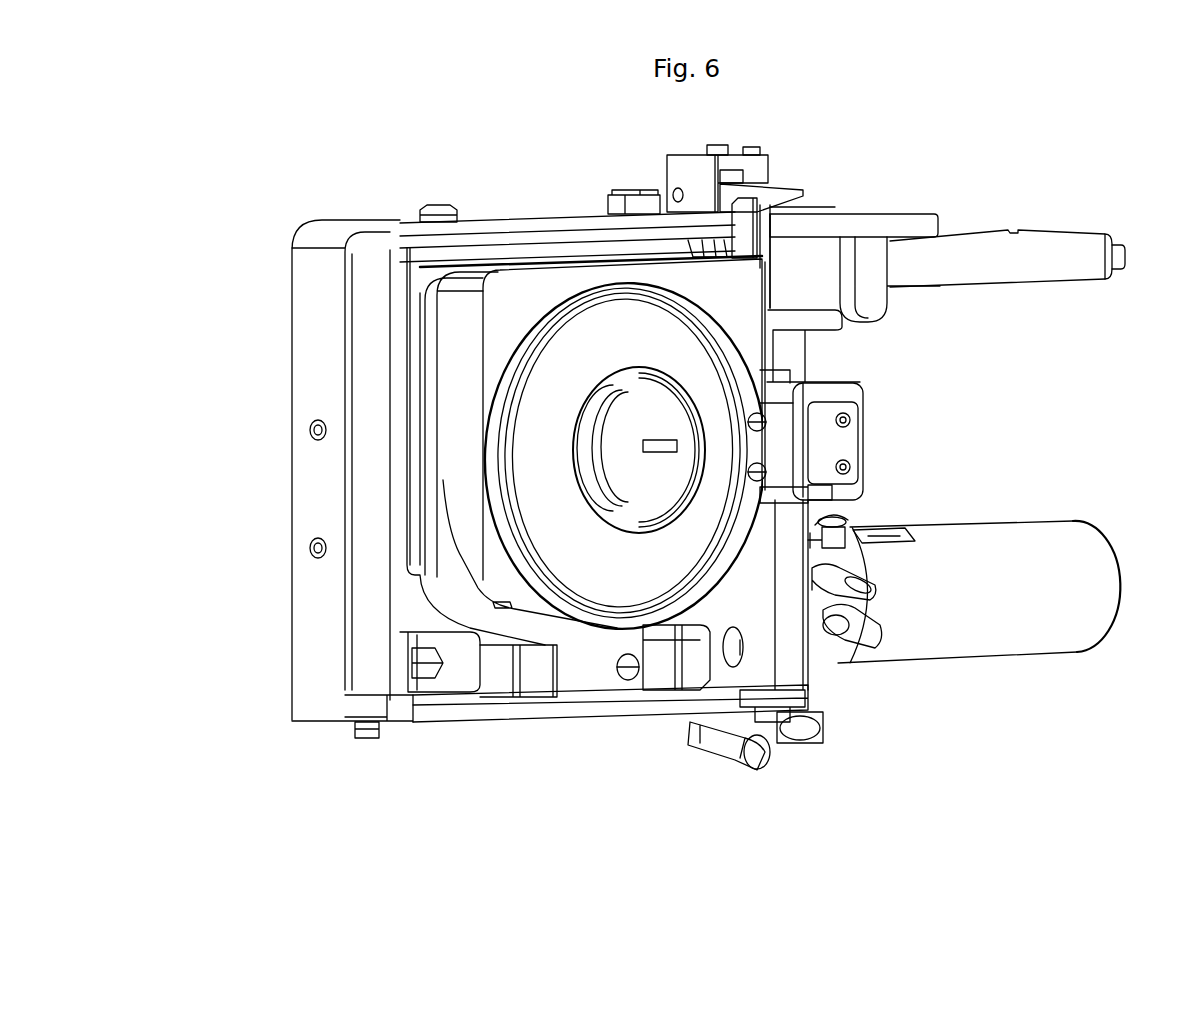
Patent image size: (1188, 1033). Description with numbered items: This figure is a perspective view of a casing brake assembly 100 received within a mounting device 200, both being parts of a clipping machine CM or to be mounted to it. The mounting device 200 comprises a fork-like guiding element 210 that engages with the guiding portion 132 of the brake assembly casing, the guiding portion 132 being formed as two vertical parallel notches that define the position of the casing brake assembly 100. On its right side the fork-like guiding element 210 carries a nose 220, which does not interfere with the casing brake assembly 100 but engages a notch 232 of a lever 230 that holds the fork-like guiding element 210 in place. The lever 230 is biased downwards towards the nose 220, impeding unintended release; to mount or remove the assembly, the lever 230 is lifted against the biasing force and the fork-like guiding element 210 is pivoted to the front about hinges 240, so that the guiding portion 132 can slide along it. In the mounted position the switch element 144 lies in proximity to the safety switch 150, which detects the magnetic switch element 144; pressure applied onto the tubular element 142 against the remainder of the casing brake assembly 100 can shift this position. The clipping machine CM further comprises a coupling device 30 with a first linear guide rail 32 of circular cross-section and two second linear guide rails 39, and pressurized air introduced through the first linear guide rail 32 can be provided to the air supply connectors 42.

The mounting device 200 is at (490, 188).
The fork-like guiding element 210 is at (430, 318).
The guiding portion 132 is at (430, 266).
The tubular element 142 is at (540, 450).
The notch 232 is at (740, 203).
The lever 230 is at (760, 238).
The nose 220 is at (833, 213).
The second linear guide rail 39 is at (947, 258).
The safety switch 150 is at (827, 438).
The switch element 144 is at (768, 448).
The first linear guide rail 32 is at (947, 608).
The air supply connector 42 is at (847, 525).
The casing brake assembly 100 is at (577, 670).
The hinge 240 is at (460, 670).
The coupling device 30 is at (1068, 407).
The clipping machine CM is at (1018, 738).